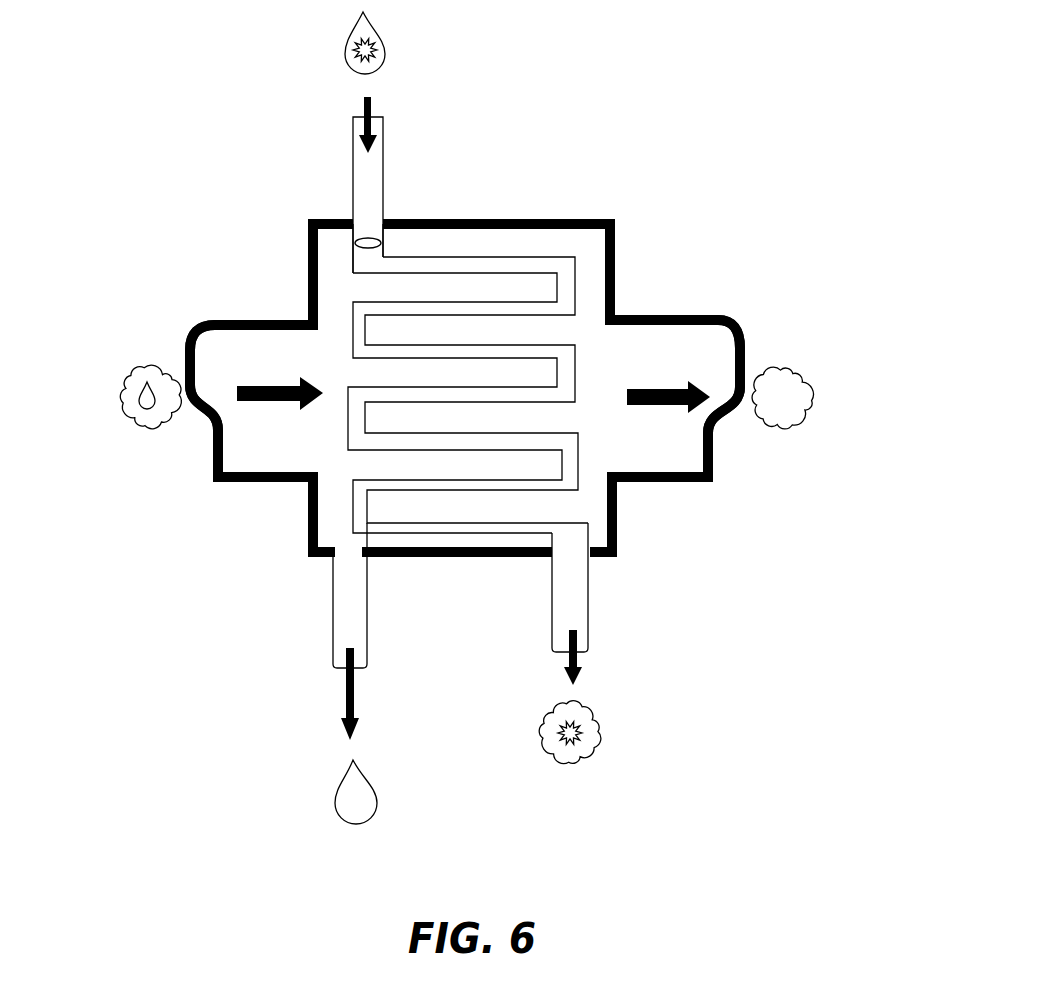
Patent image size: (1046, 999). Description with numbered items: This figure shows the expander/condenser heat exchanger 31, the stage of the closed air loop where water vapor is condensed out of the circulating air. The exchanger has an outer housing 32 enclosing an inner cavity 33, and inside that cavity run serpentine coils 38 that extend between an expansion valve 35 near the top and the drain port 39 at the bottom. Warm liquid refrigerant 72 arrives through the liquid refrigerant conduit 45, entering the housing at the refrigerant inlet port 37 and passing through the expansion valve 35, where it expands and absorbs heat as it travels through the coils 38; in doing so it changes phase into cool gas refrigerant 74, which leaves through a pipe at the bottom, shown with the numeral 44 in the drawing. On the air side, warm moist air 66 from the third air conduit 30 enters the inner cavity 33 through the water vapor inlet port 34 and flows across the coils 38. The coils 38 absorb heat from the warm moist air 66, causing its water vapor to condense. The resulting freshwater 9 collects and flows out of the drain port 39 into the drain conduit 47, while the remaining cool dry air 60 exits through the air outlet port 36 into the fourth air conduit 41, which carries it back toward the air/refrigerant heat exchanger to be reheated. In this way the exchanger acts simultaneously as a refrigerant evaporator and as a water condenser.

The freshwater 9 is at (357, 800).
The third air conduit 30 is at (213, 322).
The expander/condenser heat exchanger 31 is at (638, 90).
The outer housing 32 is at (617, 219).
The inner cavity 33 is at (594, 302).
The water vapor inlet port 34 is at (313, 442).
The expansion valve 35 is at (355, 243).
The air outlet port 36 is at (602, 438).
The refrigerant inlet port 37 is at (372, 220).
The coils 38 is at (584, 483).
The drain port 39 is at (345, 550).
The fourth air conduit 41 is at (723, 308).
The fluid outlet pipe 44 is at (596, 612).
The liquid refrigerant conduit 45 is at (390, 154).
The drain conduit 47 is at (329, 621).
The cool dry air 60 is at (795, 407).
The warm moist air 66 is at (125, 375).
The warm liquid refrigerant 72 is at (380, 33).
The cool gas refrigerant 74 is at (598, 745).